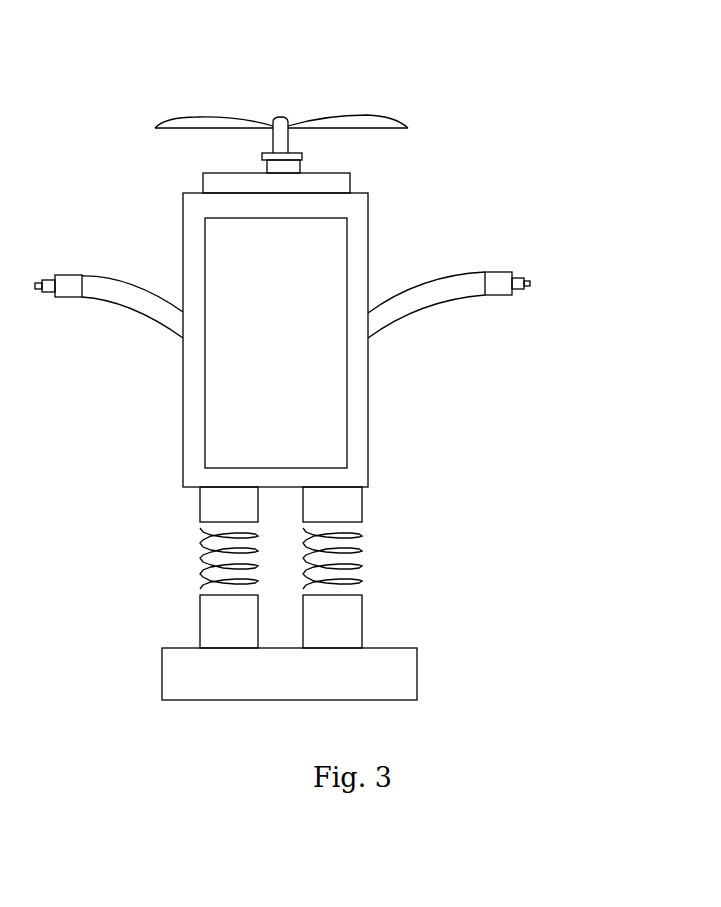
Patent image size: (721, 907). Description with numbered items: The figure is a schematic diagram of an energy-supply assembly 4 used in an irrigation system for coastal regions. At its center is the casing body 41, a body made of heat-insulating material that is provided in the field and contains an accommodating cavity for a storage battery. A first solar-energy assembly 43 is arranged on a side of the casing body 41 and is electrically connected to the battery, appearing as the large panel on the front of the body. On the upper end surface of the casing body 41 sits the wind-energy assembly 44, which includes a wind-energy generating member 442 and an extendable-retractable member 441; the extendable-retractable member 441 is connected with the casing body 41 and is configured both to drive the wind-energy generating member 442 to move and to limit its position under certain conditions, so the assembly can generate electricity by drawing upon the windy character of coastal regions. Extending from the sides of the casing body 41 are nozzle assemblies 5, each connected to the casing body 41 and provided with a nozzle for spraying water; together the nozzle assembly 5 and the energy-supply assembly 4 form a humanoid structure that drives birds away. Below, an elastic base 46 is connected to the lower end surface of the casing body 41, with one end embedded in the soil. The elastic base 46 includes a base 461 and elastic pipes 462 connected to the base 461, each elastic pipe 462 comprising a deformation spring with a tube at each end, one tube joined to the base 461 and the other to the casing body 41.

The energy-supply assembly 4 is at (493, 372).
The casing body 41 is at (362, 242).
The first solar-energy assembly 43 is at (342, 445).
The wind-energy assembly 44 is at (405, 63).
The extendable-retractable member 441 is at (308, 178).
The wind-energy generating member 442 is at (278, 150).
The elastic base 46 is at (500, 530).
The base 461 is at (360, 667).
The elastic pipe 462 is at (357, 558).
The nozzle assembly 5 is at (475, 275).